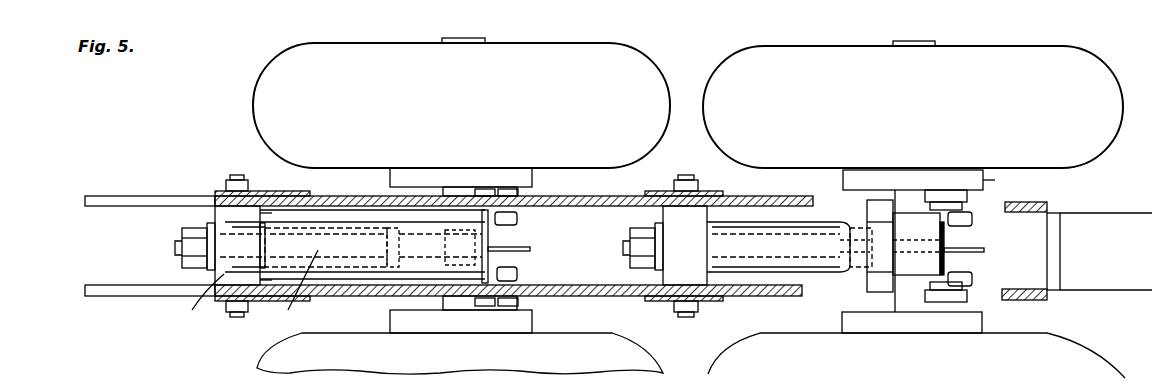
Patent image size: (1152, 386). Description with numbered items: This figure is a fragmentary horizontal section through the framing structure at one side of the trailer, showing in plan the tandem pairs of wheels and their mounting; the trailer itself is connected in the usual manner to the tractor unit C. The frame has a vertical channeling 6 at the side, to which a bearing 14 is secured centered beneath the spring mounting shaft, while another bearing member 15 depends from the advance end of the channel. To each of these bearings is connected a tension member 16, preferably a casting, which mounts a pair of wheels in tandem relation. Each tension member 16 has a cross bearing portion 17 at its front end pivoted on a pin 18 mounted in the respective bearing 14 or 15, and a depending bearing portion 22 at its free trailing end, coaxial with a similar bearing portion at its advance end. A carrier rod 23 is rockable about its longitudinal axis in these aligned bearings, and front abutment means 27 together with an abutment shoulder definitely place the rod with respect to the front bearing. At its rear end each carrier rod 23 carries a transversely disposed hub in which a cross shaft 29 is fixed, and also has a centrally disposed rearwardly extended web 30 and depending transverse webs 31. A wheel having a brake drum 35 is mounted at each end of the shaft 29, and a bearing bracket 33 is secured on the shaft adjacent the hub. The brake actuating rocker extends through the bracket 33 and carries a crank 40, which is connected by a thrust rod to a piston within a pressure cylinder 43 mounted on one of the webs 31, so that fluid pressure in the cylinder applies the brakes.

The vertical channeling 6 is at (590, 196).
The bearing 14 is at (718, 194).
The bearing member 15 is at (264, 191).
The tension member 16 is at (352, 225).
The cross bearing portion 17 is at (220, 253).
The pin 18 is at (690, 314).
The bearing portion 22 is at (388, 298).
The carrier rod 23 is at (289, 272).
The front abutment means 27 is at (178, 248).
The cross shaft 29 is at (908, 303).
The rearwardly extended web 30 is at (530, 248).
The transverse webs 31 is at (880, 245).
The bearing bracket 33 is at (975, 300).
The brake drum 35 is at (995, 180).
The crank 40 is at (520, 273).
The pressure cylinder 43 is at (883, 292).
The tractor unit C is at (1097, 148).